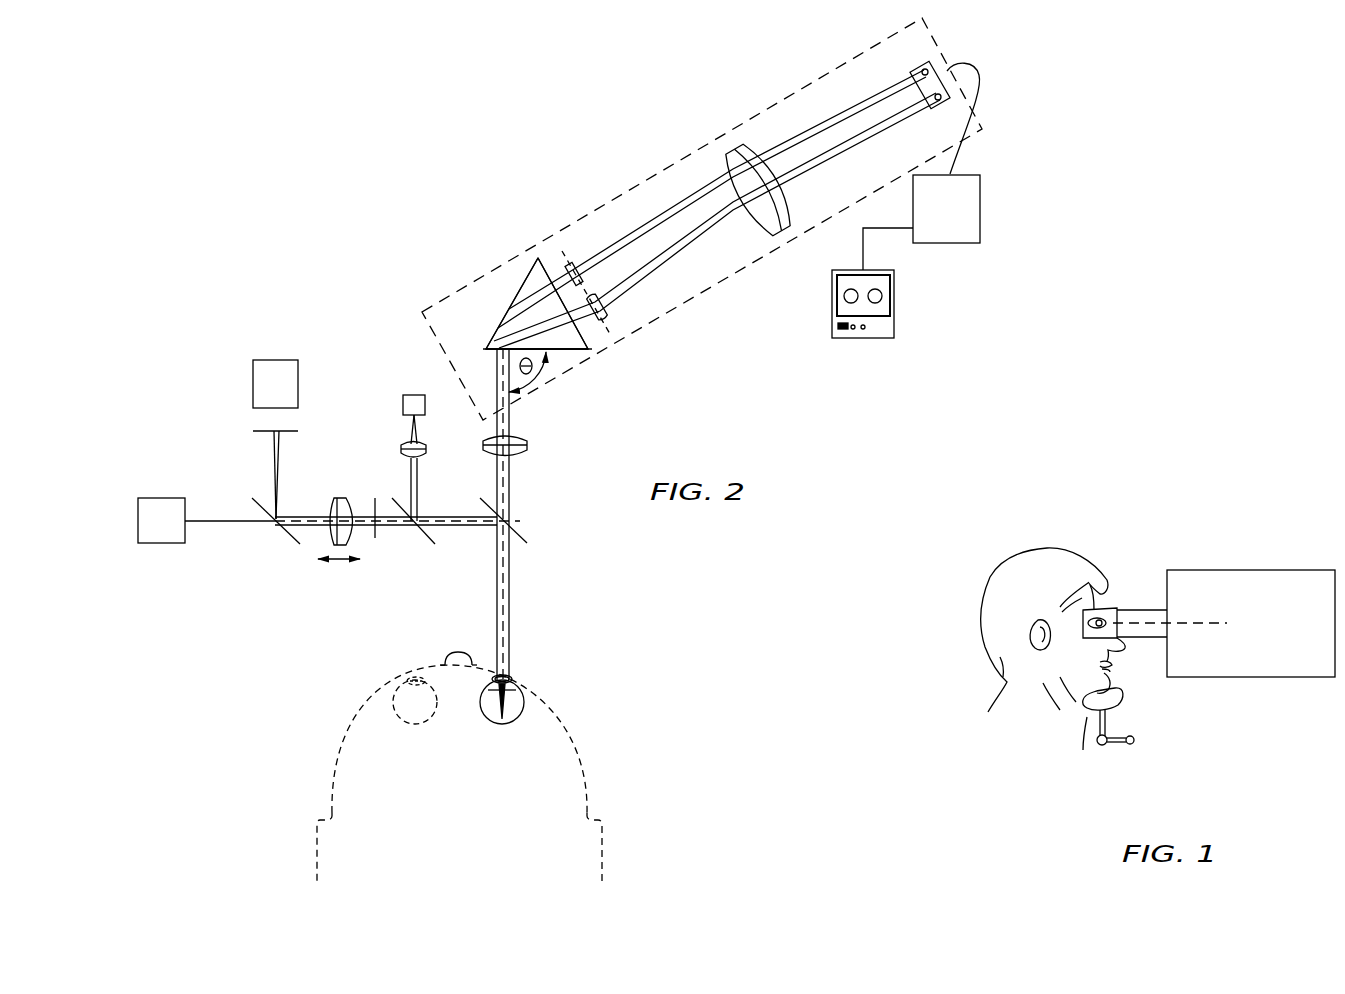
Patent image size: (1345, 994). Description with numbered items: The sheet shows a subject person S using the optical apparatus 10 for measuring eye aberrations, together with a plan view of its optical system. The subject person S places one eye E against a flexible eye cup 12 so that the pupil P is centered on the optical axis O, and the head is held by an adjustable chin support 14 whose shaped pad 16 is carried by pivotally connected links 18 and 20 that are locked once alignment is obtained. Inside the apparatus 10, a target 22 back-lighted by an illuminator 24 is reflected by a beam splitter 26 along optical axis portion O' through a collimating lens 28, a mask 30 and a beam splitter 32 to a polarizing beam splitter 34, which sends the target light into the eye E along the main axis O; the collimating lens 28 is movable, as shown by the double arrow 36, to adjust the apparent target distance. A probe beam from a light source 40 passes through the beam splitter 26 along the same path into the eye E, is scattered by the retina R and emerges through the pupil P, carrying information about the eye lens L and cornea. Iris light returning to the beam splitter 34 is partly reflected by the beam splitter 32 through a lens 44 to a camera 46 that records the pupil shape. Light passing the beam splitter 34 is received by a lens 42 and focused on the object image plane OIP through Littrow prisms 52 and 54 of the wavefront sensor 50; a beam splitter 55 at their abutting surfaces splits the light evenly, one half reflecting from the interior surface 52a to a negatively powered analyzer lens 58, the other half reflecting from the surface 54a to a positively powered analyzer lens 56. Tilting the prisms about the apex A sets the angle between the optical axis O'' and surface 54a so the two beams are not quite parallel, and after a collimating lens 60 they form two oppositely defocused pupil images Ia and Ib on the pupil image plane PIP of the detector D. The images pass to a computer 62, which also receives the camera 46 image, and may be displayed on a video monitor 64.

In FIG. 2, the optical apparatus 10 is at (328, 286).
In FIG. 1, the optical apparatus 10 is at (1230, 556).
In FIG. 1, the flexible eye cup 12 is at (1112, 608).
In FIG. 1, the adjustable chin support 14 is at (1125, 722).
In FIG. 1, the shaped pad 16 is at (1083, 725).
In FIG. 1, the link 18 is at (1098, 738).
In FIG. 1, the link 20 is at (1126, 745).
In FIG. 2, the target 22 is at (255, 432).
In FIG. 2, the illuminator 24 is at (253, 383).
In FIG. 2, the beam splitter 26 is at (299, 540).
In FIG. 2, the collimating lens 28 is at (331, 508).
In FIG. 2, the mask 30 is at (375, 538).
In FIG. 2, the beam splitter 32 is at (435, 540).
In FIG. 2, the polarizing beam splitter 34 is at (528, 523).
In FIG. 2, the double arrow 36 is at (342, 562).
In FIG. 2, the light source 40 is at (163, 545).
In FIG. 2, the lens 42 is at (528, 441).
In FIG. 2, the lens 44 is at (401, 449).
In FIG. 2, the camera 46 is at (404, 409).
In FIG. 2, the wavefront sensor 50 is at (665, 161).
In FIG. 2, the Littrow prism 52 is at (524, 268).
In FIG. 2, the interior surface 52a is at (524, 287).
In FIG. 2, the Littrow prism 54 is at (586, 352).
In FIG. 2, the surface 54a is at (557, 351).
In FIG. 2, the beam splitter 55 is at (493, 346).
In FIG. 2, the positively powered analyzer lens 56 is at (607, 308).
In FIG. 2, the negatively powered analyzer lens 58 is at (576, 260).
In FIG. 2, the collimating lens 60 is at (752, 150).
In FIG. 2, the computer 62 is at (981, 210).
In FIG. 2, the video monitor 64 is at (895, 301).
In FIG. 2, the apex A is at (489, 352).
In FIG. 2, the detector D is at (950, 62).
In FIG. 2, the eye E is at (384, 692).
In FIG. 1, the eye E is at (1088, 608).
In FIG. 2, the subject person S is at (350, 728).
In FIG. 1, the subject person S is at (975, 617).
In FIG. 2, the pupil P is at (490, 679).
In FIG. 2, the eye lens L is at (522, 679).
In FIG. 2, the retina R is at (492, 715).
In FIG. 2, the optical axis O is at (535, 602).
In FIG. 1, the optical axis O is at (1145, 660).
In FIG. 2, the optical axis portion O' is at (455, 486).
In FIG. 2, the optical axis O'' is at (542, 482).
In FIG. 2, the object image plane OIP is at (563, 255).
In FIG. 2, the pupil image plane PIP is at (917, 58).
In FIG. 2, the pupil image Ia is at (927, 68).
In FIG. 2, the pupil image Ib is at (937, 103).